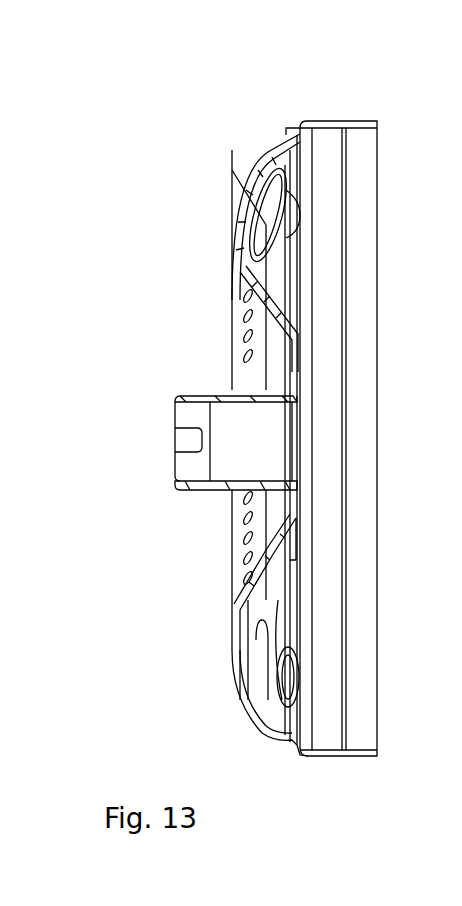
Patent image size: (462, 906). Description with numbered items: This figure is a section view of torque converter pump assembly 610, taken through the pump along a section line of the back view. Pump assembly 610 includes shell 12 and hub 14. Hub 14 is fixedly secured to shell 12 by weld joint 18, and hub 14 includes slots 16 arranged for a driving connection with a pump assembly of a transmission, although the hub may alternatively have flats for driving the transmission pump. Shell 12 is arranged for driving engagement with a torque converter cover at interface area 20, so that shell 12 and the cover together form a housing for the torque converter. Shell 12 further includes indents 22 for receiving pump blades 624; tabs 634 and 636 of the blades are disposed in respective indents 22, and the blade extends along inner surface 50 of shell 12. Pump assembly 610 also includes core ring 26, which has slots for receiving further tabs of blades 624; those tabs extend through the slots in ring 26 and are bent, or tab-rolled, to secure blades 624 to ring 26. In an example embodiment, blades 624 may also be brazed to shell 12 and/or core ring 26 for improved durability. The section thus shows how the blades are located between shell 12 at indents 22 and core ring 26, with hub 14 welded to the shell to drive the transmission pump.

The torque converter pump assembly 610 is at (214, 148).
The tab 634 is at (262, 152).
The indents 22 is at (268, 147).
The shell 12 is at (318, 122).
The interface area 20 is at (362, 129).
The weld joint 18 is at (264, 346).
The slots 16 is at (188, 432).
The hub 14 is at (213, 486).
The tab 636 is at (236, 672).
The pump blades 624 is at (305, 615).
The core ring 26 is at (303, 680).
The inner surface 50 is at (263, 730).